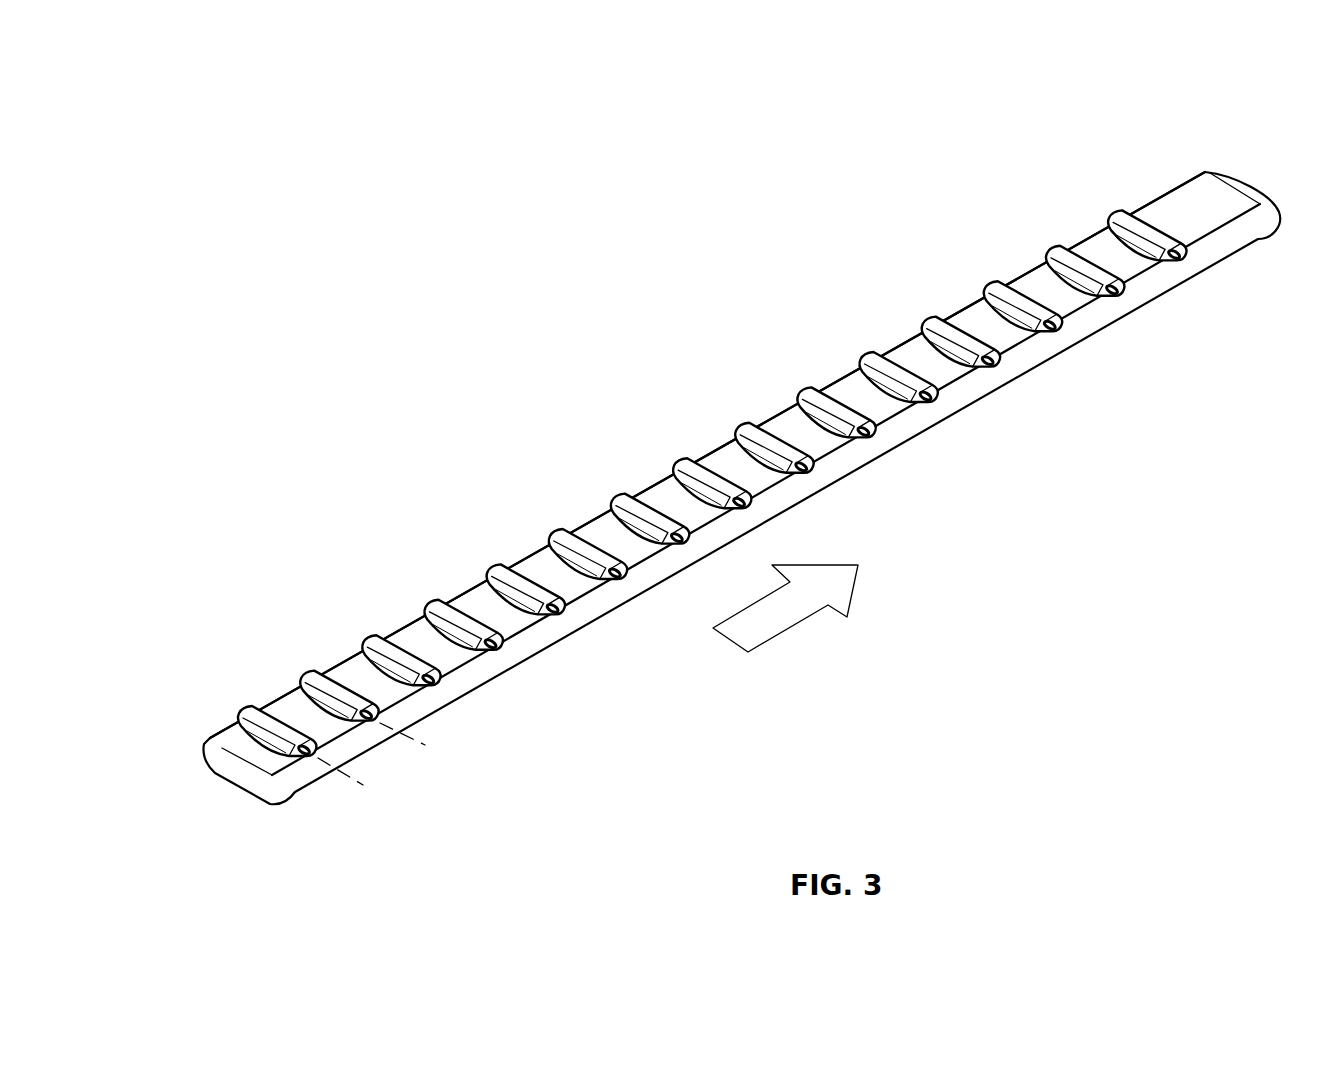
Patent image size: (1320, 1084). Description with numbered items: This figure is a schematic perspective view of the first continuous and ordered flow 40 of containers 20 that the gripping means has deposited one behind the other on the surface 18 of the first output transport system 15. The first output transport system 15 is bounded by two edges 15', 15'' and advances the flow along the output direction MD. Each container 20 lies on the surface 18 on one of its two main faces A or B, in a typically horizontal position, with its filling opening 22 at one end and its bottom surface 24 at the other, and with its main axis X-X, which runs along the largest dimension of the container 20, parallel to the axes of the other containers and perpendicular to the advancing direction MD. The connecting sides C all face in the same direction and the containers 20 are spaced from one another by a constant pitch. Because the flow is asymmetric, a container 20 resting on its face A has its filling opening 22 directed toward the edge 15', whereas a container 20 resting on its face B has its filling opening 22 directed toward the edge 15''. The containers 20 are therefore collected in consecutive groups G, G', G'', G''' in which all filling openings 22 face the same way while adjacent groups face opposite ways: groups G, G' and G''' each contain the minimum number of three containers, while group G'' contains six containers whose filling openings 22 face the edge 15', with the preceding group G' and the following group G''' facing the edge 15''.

The first output transport system 15 is at (741, 440).
The edge of the first output transport system 15' is at (707, 455).
The edge of the first output transport system 15'' is at (766, 489).
The surface of the first output transport system 18 is at (872, 415).
The container 20 is at (520, 583).
The filling opening 22 is at (436, 685).
The bottom surface 24 is at (499, 652).
The continuous and ordered flow of containers 40 is at (585, 355).
The group of containers G is at (263, 665).
The group of containers G' is at (471, 543).
The group of containers G'' is at (715, 399).
The group of containers G''' is at (1027, 224).
The main face A is at (1012, 300).
The main face B is at (928, 315).
The connecting side C is at (372, 653).
The output direction MD is at (778, 605).
The main axis X-X is at (418, 742).